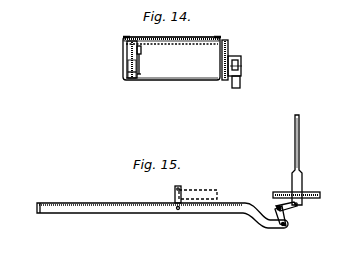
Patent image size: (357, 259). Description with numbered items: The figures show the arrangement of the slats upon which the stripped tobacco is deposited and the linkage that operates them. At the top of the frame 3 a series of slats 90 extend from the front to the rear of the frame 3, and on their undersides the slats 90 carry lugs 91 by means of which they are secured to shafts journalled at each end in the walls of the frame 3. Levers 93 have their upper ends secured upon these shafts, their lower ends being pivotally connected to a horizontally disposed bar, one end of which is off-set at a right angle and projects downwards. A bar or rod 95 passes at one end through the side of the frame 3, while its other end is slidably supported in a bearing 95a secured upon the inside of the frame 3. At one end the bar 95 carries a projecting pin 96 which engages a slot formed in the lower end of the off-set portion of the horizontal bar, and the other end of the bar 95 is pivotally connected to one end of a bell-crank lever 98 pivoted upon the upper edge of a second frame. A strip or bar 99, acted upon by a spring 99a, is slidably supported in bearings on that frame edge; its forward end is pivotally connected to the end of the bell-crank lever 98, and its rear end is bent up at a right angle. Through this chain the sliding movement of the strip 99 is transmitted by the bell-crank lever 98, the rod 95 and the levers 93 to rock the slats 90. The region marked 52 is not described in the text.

In FIG. 14, the frame 3 is at (124, 37).
In FIG. 14, the box body 52 is at (171, 58).
In FIG. 14, the slats 90 is at (193, 37).
In FIG. 15, the slats 90 is at (120, 208).
In FIG. 14, the lugs 91 is at (235, 54).
In FIG. 14, the levers 93 is at (140, 52).
In FIG. 14, the bar or rod 95 is at (128, 66).
In FIG. 15, the bar or rod 95 is at (299, 140).
In FIG. 14, the bearing 95a is at (129, 75).
In FIG. 14, the pin 96 is at (140, 64).
In FIG. 15, the bell-crank lever 98 is at (289, 220).
In FIG. 15, the strip or bar 99 is at (203, 198).
In FIG. 15, the spring 99a is at (204, 191).